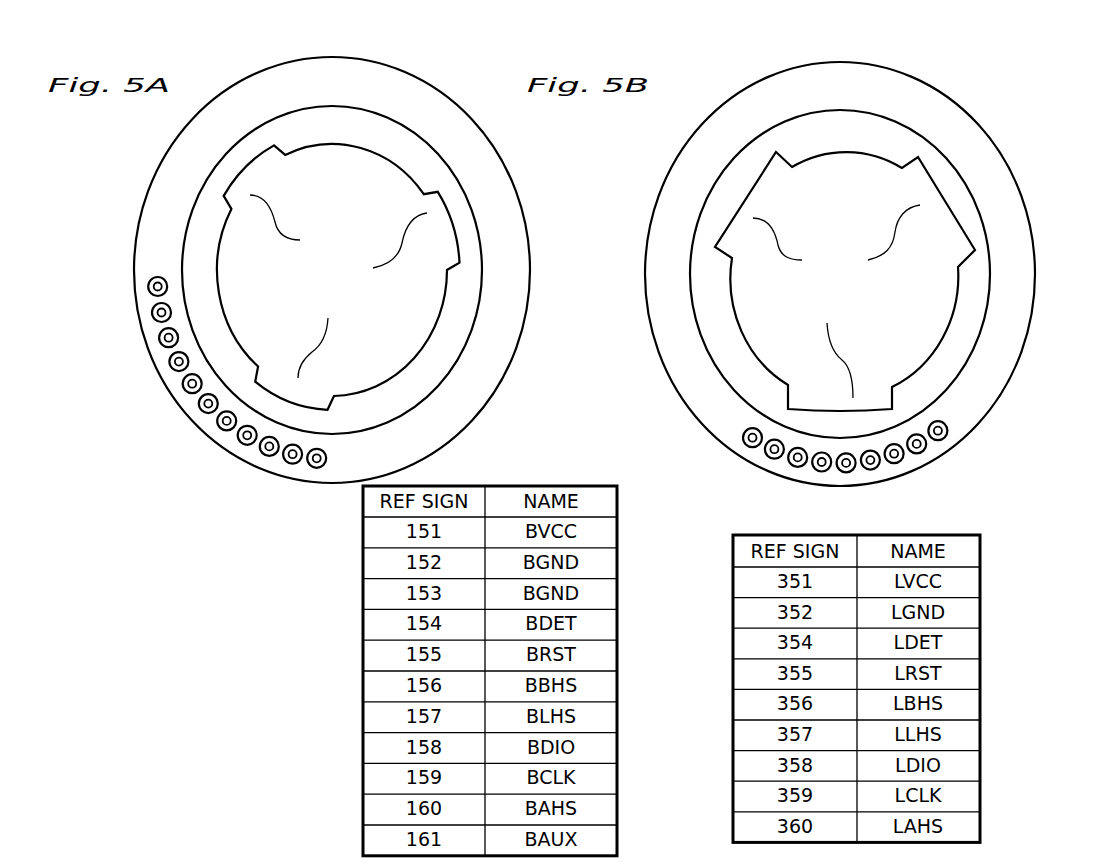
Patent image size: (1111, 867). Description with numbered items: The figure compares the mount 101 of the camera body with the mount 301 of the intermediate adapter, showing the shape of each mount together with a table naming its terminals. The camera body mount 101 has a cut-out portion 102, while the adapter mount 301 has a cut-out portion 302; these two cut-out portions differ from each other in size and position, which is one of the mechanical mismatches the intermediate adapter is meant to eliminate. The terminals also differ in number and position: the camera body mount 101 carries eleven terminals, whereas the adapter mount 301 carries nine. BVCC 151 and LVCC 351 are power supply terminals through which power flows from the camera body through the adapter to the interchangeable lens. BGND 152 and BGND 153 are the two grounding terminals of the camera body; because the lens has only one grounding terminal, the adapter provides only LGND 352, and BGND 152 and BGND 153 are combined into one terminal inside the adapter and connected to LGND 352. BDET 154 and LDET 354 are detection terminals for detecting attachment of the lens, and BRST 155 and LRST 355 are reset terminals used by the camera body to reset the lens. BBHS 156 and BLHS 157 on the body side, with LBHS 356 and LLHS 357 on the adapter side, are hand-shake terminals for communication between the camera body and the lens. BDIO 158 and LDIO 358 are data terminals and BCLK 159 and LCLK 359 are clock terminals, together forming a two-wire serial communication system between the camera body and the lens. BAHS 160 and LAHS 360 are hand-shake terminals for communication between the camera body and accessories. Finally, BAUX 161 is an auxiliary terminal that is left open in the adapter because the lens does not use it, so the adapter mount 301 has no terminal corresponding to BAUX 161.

In FIG. 5A, the mount 101 is at (148, 192).
In FIG. 5A, the cut-out portion 102 is at (338, 277).
In FIG. 5A, the BVCC terminal 151 is at (147, 287).
In FIG. 5A, the BGND terminal 152 is at (151, 315).
In FIG. 5A, the BGND terminal 153 is at (159, 342).
In FIG. 5A, the BDET terminal 154 is at (170, 366).
In FIG. 5A, the BRST terminal 155 is at (183, 389).
In FIG. 5A, the BBHS terminal 156 is at (200, 410).
In FIG. 5A, the BLHS terminal 157 is at (218, 427).
In FIG. 5A, the BDIO terminal 158 is at (239, 442).
In FIG. 5A, the BCLK terminal 159 is at (261, 453).
In FIG. 5A, the BAHS terminal 160 is at (285, 461).
In FIG. 5A, the BAUX terminal 161 is at (309, 465).
In FIG. 5B, the mount 301 is at (678, 165).
In FIG. 5B, the cut-out portion 302 is at (845, 281).
In FIG. 5B, the LVCC terminal 351 is at (743, 442).
In FIG. 5B, the LGND terminal 352 is at (765, 454).
In FIG. 5B, the LDET terminal 354 is at (789, 463).
In FIG. 5B, the LRST terminal 355 is at (813, 468).
In FIG. 5B, the LBHS terminal 356 is at (846, 473).
In FIG. 5B, the LLHS terminal 357 is at (879, 466).
In FIG. 5B, the LDIO terminal 358 is at (903, 459).
In FIG. 5B, the LCLK terminal 359 is at (926, 448).
In FIG. 5B, the LAHS terminal 360 is at (948, 434).